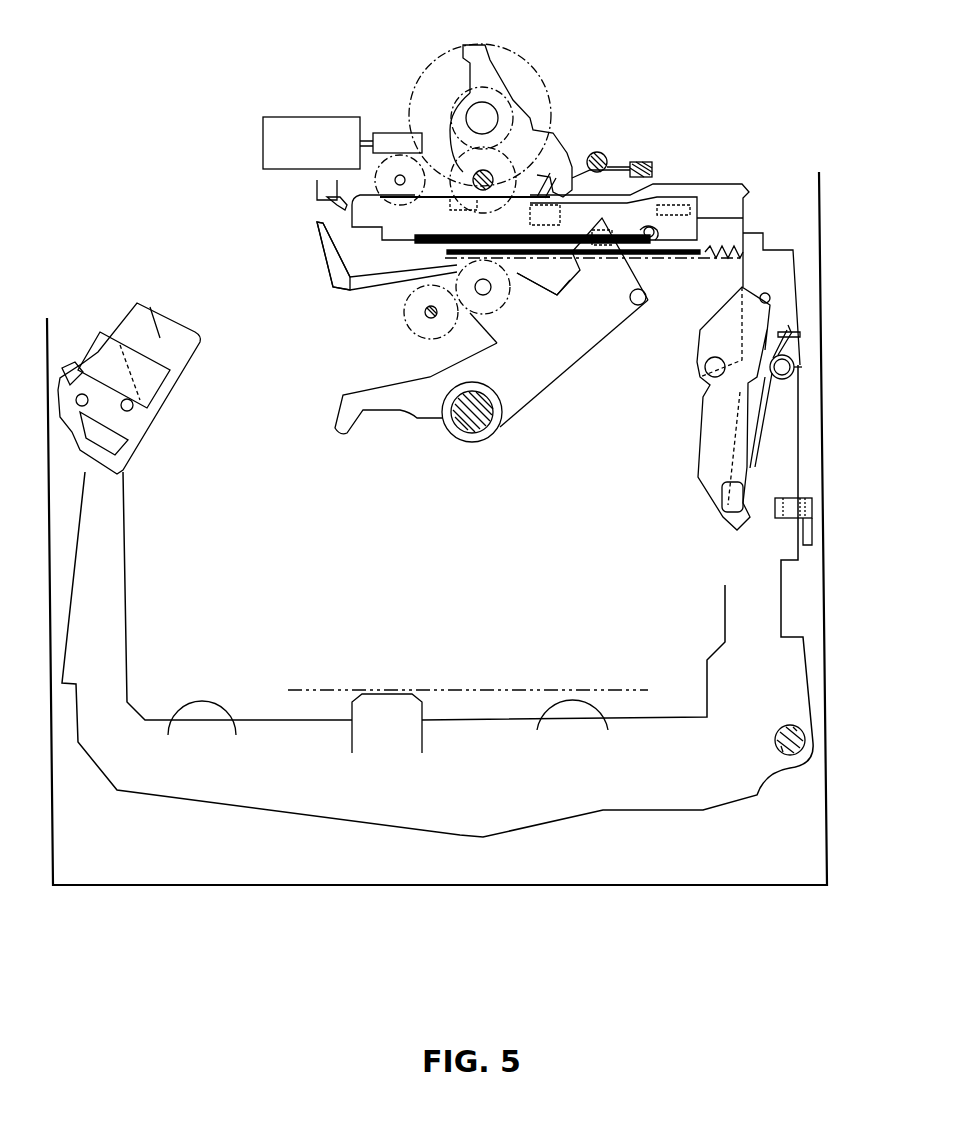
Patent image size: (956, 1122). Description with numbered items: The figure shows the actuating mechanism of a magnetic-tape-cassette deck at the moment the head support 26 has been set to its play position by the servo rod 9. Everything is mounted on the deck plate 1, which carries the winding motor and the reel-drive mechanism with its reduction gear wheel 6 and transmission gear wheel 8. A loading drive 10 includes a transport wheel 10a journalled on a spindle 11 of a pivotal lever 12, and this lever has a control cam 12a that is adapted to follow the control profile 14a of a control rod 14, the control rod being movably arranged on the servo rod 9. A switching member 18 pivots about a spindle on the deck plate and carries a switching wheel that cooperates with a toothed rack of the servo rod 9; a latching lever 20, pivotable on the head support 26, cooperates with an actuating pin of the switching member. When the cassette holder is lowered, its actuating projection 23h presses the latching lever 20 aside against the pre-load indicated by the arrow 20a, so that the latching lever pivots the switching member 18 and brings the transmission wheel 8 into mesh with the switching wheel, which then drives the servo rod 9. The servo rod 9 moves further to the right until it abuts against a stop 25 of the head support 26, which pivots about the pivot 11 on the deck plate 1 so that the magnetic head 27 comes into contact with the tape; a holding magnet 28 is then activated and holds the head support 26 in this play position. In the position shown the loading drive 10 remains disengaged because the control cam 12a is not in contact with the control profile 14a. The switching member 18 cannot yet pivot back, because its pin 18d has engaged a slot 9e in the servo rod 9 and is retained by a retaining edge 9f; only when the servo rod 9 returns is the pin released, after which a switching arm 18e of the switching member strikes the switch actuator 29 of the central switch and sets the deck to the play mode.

The deck plate 1 is at (405, 868).
The reduction gear wheel 6 is at (373, 177).
The transmission gear wheel 8 is at (417, 332).
The servo rod 9 is at (355, 222).
The slot 9e is at (658, 228).
The retaining edge 9f is at (645, 235).
The loading drive 10 is at (532, 105).
The transport wheel 10a is at (420, 78).
The spindle 11 is at (777, 728).
The pivotal lever 12 is at (481, 60).
The control cam 12a is at (573, 153).
The control rod 14 is at (733, 190).
The control profile 14a is at (713, 185).
The switching member 18 is at (565, 362).
The pin 18d is at (633, 293).
The switching arm 18e is at (332, 267).
The latching lever 20 is at (707, 463).
The arrow 20a is at (700, 438).
The actuating projection 23h is at (785, 513).
The stop 25 is at (753, 240).
The head support 26 is at (620, 787).
The magnetic head 27 is at (387, 703).
The holding magnet 28 is at (175, 358).
The switch actuator 29 is at (487, 690).